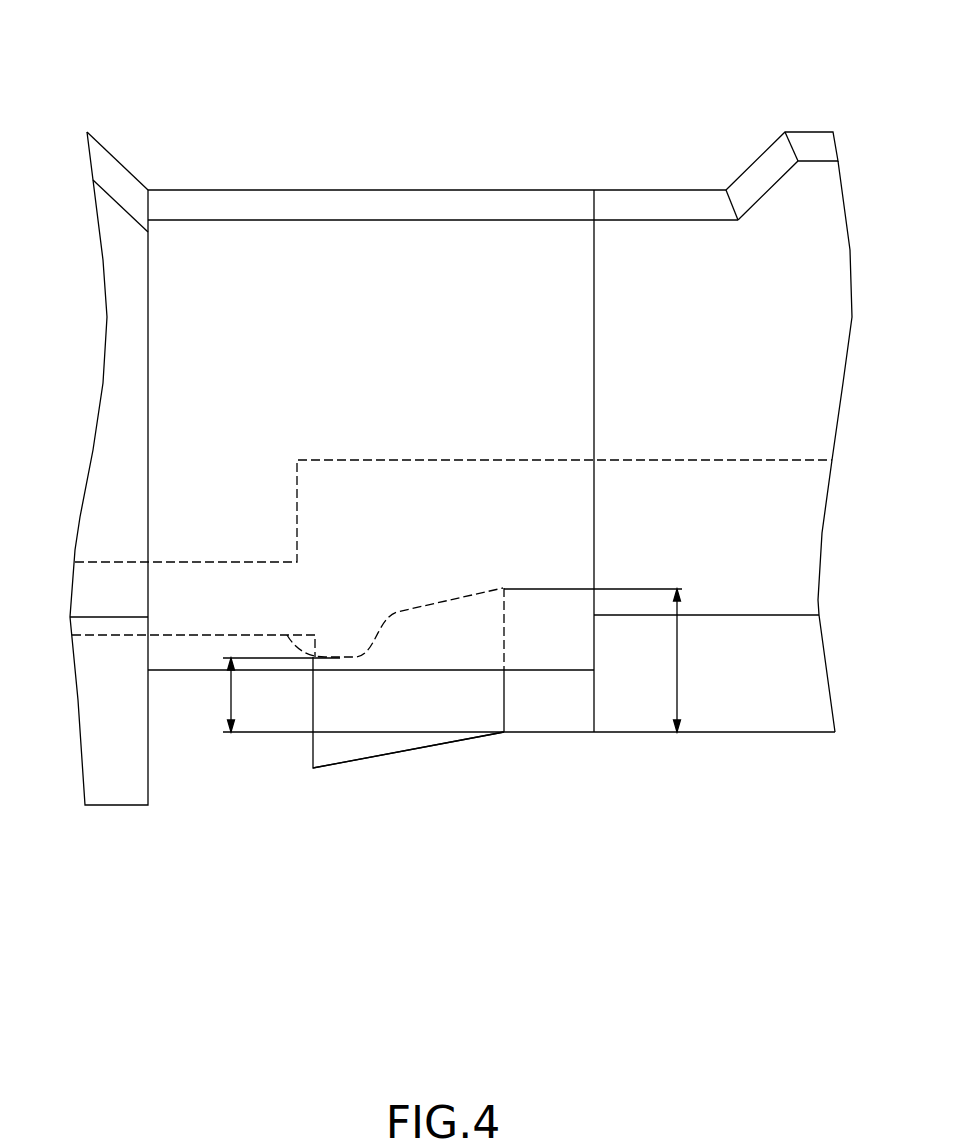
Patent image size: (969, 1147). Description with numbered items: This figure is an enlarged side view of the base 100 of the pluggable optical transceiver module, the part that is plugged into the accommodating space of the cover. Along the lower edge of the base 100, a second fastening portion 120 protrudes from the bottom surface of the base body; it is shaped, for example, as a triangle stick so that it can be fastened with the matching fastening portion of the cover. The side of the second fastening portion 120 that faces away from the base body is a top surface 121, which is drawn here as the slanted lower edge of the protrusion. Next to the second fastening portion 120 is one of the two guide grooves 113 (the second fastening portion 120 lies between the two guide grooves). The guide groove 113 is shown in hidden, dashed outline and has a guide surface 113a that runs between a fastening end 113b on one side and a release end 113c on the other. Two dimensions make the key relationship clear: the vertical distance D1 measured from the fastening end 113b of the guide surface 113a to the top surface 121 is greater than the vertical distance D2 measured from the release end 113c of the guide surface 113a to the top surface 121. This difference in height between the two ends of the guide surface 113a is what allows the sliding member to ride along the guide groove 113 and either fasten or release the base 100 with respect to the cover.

The base 100 is at (293, 70).
The guide groove 113 is at (410, 658).
The guide surface 113a is at (438, 615).
The fastening end 113b is at (485, 595).
The release end 113c is at (340, 658).
The second fastening portion 120 is at (338, 752).
The top surface 121 is at (366, 770).
The vertical distance D1 is at (593, 660).
The vertical distance D2 is at (266, 695).